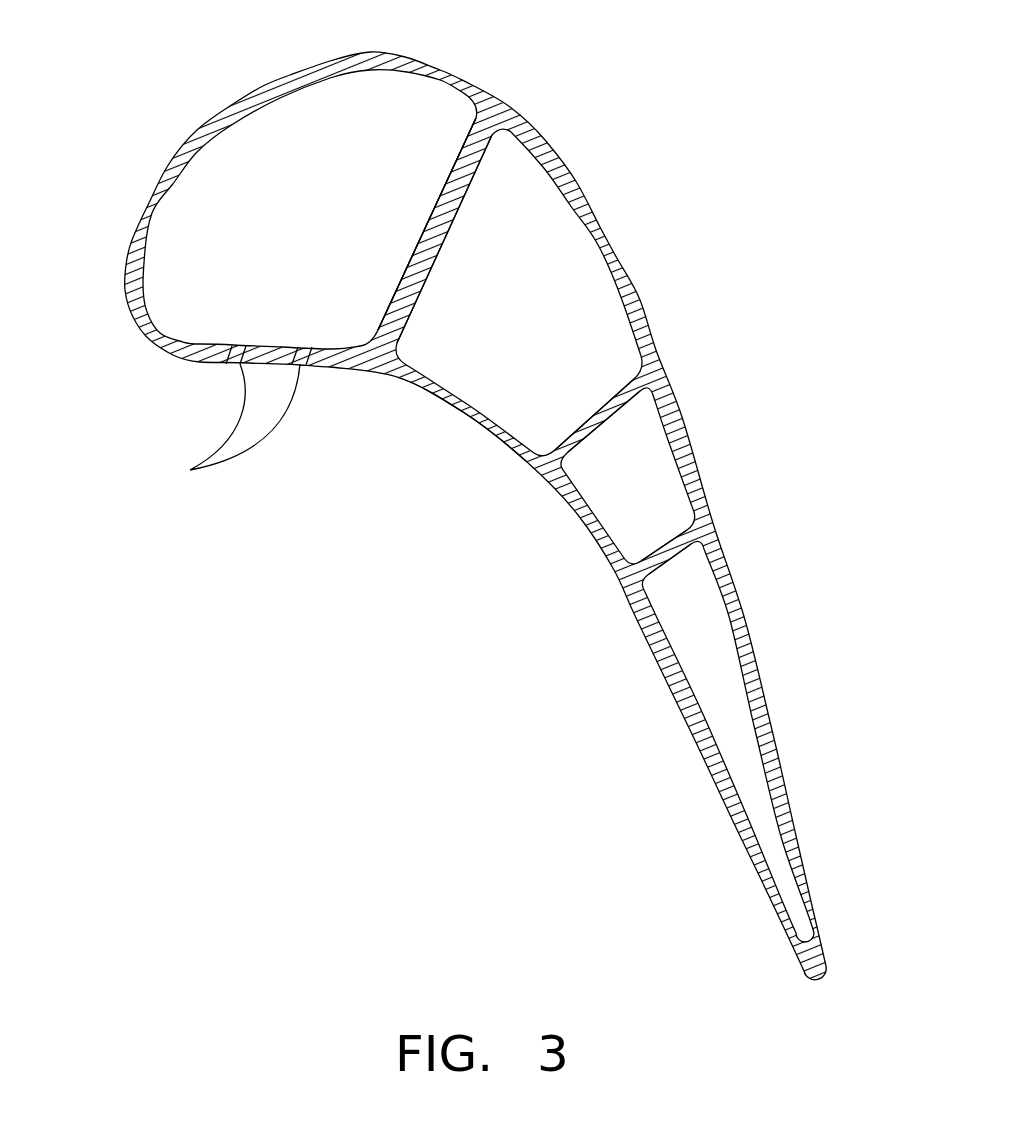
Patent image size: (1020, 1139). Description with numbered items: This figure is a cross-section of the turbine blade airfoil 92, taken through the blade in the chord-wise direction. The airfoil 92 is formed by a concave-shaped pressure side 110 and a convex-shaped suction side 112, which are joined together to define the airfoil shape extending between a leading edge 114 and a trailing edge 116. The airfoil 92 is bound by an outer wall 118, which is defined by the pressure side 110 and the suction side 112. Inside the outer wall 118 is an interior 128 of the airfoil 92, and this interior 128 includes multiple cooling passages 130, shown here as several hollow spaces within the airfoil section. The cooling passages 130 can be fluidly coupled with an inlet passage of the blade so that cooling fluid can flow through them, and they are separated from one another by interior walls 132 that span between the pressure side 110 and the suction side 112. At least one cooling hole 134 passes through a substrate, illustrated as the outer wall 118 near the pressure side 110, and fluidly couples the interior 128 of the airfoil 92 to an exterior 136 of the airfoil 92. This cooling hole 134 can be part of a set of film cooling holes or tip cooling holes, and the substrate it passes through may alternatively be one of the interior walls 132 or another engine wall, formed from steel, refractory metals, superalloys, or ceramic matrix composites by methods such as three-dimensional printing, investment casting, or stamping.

The airfoil 92 is at (519, 109).
The pressure side 110 is at (532, 470).
The suction side 112 is at (617, 244).
The leading edge 114 is at (142, 215).
The trailing edge 116 is at (815, 980).
The outer wall 118 is at (477, 410).
The interior 128 is at (397, 101).
The cooling passages 130 is at (340, 222).
The interior walls 132 is at (448, 232).
The cooling hole 134 is at (192, 471).
The exterior 136 is at (375, 589).